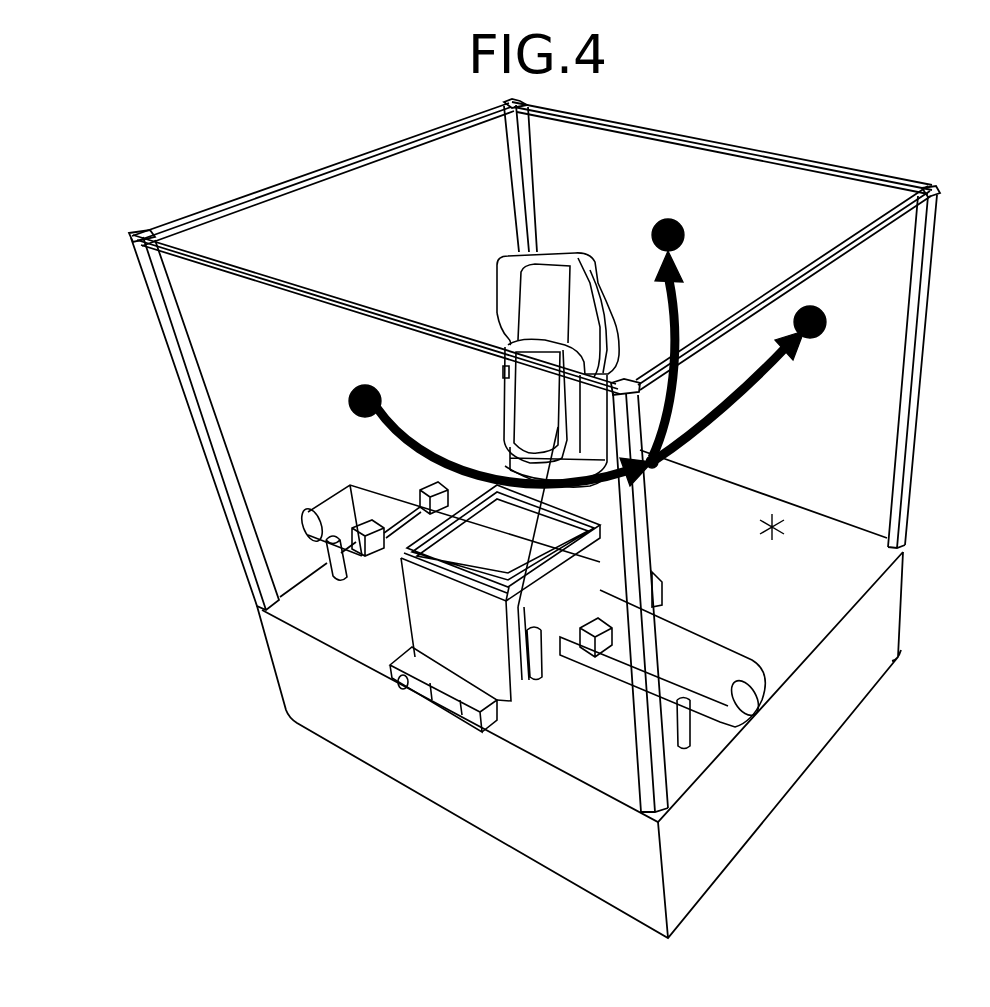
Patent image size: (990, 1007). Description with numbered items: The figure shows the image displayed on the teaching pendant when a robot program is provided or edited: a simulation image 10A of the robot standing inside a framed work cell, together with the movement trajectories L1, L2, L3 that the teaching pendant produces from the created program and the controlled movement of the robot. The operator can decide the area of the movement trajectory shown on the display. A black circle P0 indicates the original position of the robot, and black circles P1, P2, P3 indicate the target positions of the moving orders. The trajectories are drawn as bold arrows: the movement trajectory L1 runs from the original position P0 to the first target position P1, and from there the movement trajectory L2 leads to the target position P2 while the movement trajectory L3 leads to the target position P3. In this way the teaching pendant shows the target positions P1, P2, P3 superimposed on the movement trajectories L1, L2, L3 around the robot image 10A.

The image of the robot 10A is at (571, 244).
The original position P0 is at (355, 388).
The target position P1 is at (674, 480).
The target position P2 is at (830, 328).
The target position P3 is at (686, 238).
The movement trajectory L1 is at (410, 442).
The movement trajectory L2 is at (770, 375).
The movement trajectory L3 is at (678, 291).